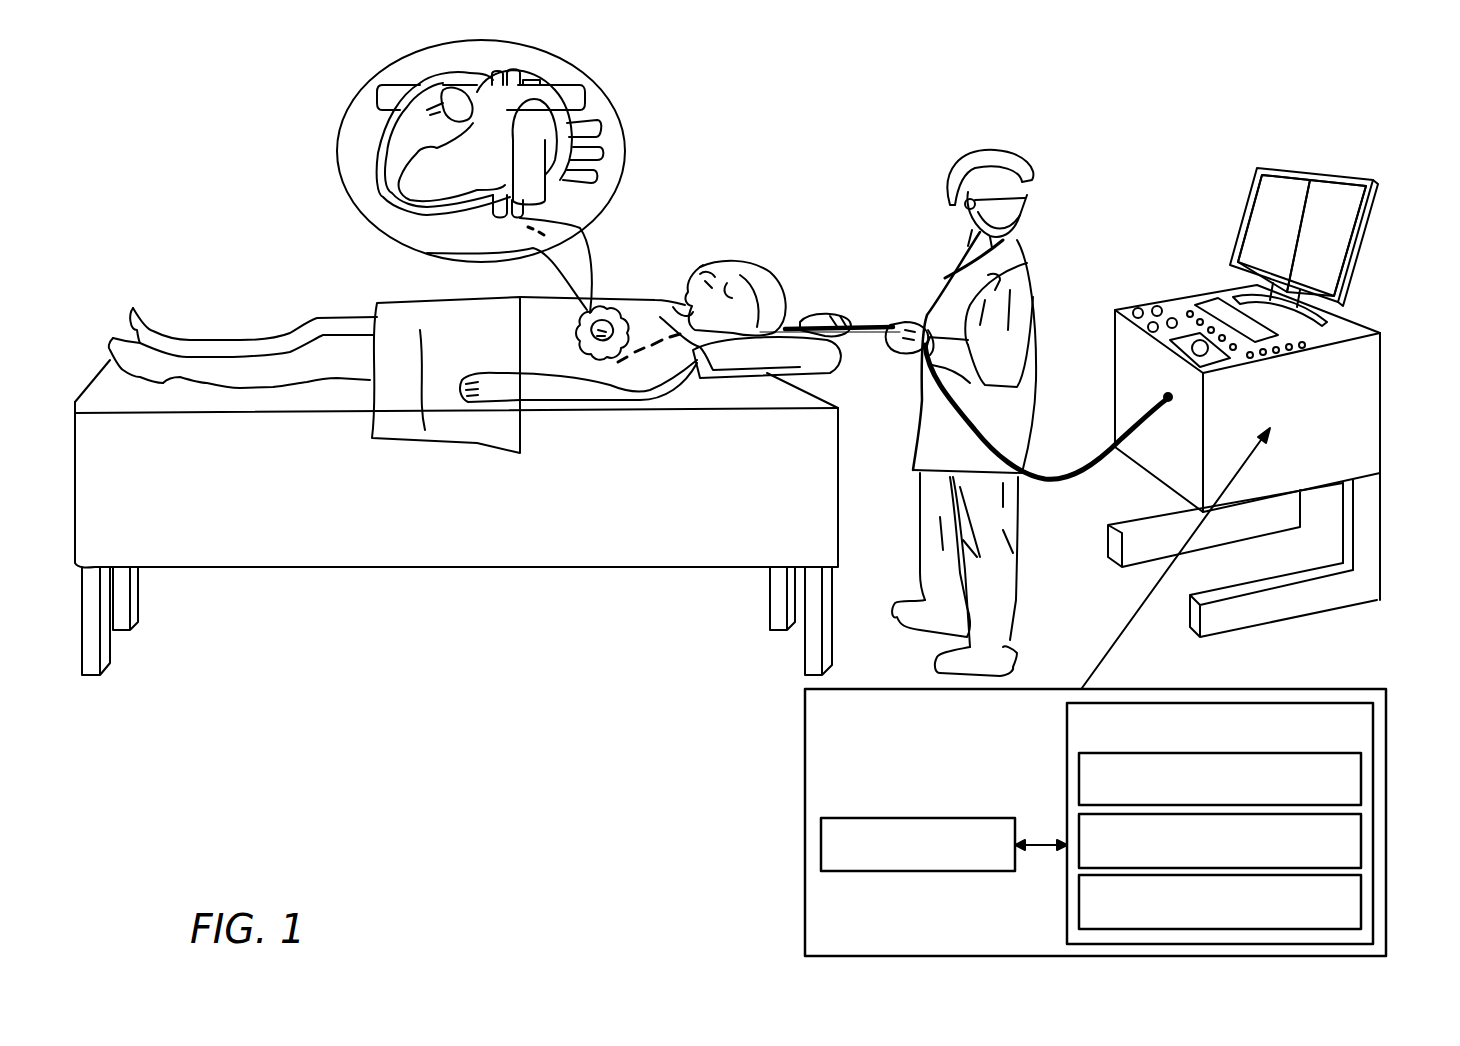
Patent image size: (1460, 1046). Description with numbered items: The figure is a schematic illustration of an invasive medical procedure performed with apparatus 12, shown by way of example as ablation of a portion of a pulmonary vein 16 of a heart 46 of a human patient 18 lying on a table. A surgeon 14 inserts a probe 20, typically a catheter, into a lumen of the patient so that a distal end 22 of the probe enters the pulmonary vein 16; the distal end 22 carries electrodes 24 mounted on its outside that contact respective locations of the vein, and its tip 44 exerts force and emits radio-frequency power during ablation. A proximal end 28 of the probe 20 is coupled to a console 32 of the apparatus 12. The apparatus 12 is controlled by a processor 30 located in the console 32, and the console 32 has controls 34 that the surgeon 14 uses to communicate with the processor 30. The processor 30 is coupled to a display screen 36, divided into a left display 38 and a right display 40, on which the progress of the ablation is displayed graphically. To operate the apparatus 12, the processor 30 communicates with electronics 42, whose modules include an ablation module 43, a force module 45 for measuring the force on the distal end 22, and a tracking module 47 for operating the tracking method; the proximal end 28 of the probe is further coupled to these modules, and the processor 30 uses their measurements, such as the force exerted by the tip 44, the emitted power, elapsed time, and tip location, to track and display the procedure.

The apparatus 12 is at (1150, 115).
The surgeon 14 is at (1020, 148).
The pulmonary vein 16 is at (460, 250).
The human patient 18 is at (767, 265).
The probe 20 is at (820, 322).
The distal end 22 is at (653, 268).
The electrodes 24 is at (692, 245).
The proximal end 28 is at (1157, 393).
The processor 30 is at (821, 850).
The console 32 is at (1178, 337).
The controls 34 is at (1155, 306).
The display screen 36 is at (1365, 228).
The left display 38 is at (1282, 185).
The right display 40 is at (1333, 190).
The electronics 42 is at (1067, 745).
The ablation module 43 is at (1361, 779).
The tip 44 is at (580, 228).
The force module 45 is at (1361, 840).
The heart 46 is at (420, 137).
The tracking module 47 is at (1361, 898).